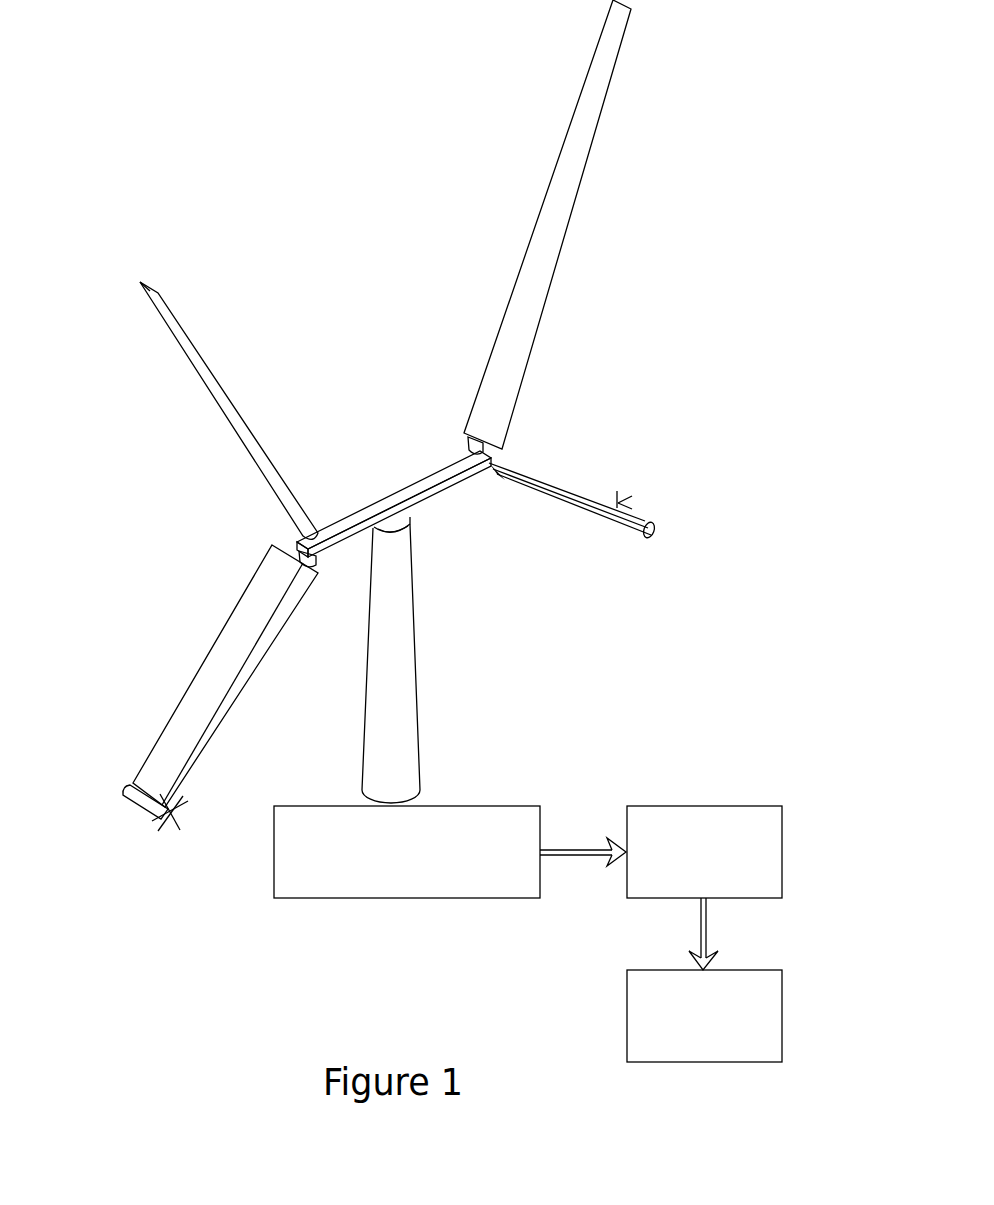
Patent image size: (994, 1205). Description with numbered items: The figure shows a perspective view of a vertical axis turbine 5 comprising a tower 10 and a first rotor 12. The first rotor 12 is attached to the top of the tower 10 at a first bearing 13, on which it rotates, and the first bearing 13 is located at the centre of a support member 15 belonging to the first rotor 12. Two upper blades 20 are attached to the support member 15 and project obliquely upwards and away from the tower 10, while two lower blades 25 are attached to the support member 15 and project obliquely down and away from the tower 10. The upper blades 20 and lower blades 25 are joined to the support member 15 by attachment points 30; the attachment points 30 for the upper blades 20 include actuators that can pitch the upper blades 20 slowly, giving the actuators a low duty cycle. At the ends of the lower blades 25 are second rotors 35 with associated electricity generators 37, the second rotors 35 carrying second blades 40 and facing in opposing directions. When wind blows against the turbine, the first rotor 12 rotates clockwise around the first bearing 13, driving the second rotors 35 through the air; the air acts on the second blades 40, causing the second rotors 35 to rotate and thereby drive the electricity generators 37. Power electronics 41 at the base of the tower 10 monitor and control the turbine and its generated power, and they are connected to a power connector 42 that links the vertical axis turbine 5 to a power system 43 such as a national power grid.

The vertical axis turbine 5 is at (136, 130).
The tower 10 is at (400, 686).
The first rotor 12 is at (658, 200).
The first bearing 13 is at (410, 525).
The support member 15 is at (420, 478).
The upper blades 20 is at (527, 306).
The lower blades 25 is at (548, 487).
The attachment points 30 is at (468, 440).
The second rotors 35 is at (180, 806).
The electricity generators 37 is at (130, 787).
The second blades 40 is at (170, 815).
The power electronics 41 is at (274, 895).
The power connector 42 is at (740, 806).
The power system 43 is at (627, 1003).